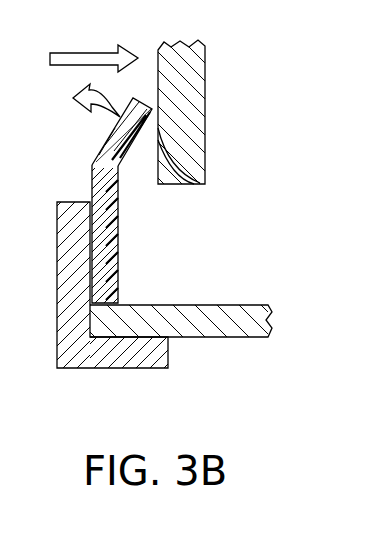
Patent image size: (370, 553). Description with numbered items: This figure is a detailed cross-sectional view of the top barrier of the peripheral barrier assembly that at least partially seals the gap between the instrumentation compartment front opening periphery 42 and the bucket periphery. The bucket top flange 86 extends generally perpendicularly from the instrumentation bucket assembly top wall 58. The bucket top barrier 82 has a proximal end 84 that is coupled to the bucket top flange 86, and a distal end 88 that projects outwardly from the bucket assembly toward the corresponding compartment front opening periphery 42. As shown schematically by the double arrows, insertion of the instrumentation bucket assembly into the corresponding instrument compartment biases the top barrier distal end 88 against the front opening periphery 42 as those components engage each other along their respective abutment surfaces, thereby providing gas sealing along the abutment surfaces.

The front opening periphery 42 is at (188, 120).
The instrumentation bucket assembly top wall 58 is at (249, 322).
The bucket top barrier 82 is at (103, 153).
The proximal end 84 is at (112, 237).
The bucket top flange 86 is at (138, 369).
The distal end 88 is at (200, 182).